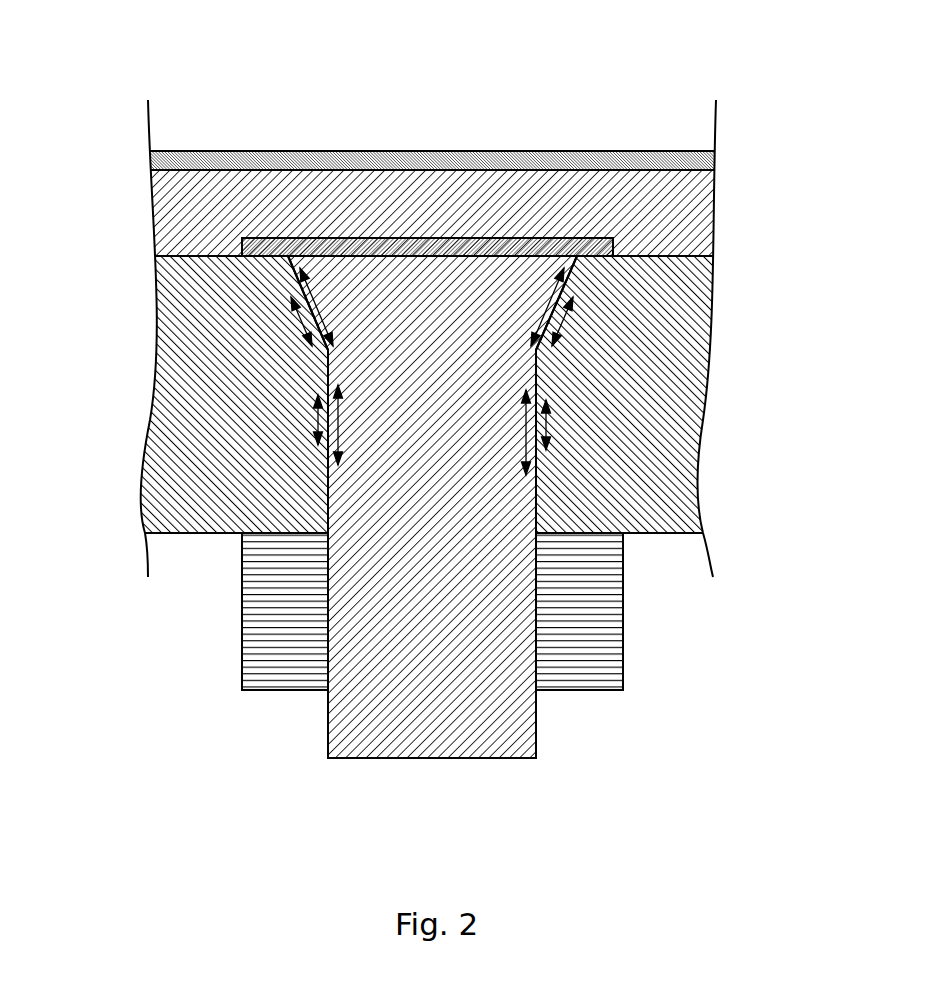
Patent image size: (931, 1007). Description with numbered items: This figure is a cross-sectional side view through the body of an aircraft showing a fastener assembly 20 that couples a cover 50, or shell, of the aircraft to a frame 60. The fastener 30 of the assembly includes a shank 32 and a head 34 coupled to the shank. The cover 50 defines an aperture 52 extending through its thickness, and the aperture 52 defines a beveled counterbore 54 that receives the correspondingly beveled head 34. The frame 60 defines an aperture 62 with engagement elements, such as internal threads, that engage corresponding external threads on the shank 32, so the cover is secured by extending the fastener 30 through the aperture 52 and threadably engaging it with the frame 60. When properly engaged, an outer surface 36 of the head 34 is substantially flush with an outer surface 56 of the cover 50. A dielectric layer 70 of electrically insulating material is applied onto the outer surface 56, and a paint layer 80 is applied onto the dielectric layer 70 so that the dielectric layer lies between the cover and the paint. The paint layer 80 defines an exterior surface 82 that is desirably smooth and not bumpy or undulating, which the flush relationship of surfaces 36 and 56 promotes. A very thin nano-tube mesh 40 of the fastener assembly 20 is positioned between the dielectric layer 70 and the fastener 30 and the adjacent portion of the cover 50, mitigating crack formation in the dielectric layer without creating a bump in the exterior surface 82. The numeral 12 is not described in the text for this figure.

The fastener assembly 20 is at (431, 383).
The substrate 12 is at (232, 151).
The paint layer 80 is at (276, 151).
The exterior surface 82 is at (363, 151).
The outer surface of the head 36 is at (430, 255).
The dielectric layer 70 is at (172, 210).
The nano-tube mesh 40 is at (583, 238).
The outer surface of the cover 56 is at (684, 256).
The head 34 is at (557, 257).
The counterbore 54 is at (293, 267).
The cover 50 is at (688, 428).
The aperture 52 is at (333, 482).
The shank 32 is at (340, 596).
The fastener 30 is at (328, 614).
The aperture of the frame 62 is at (333, 647).
The frame 60 is at (603, 637).